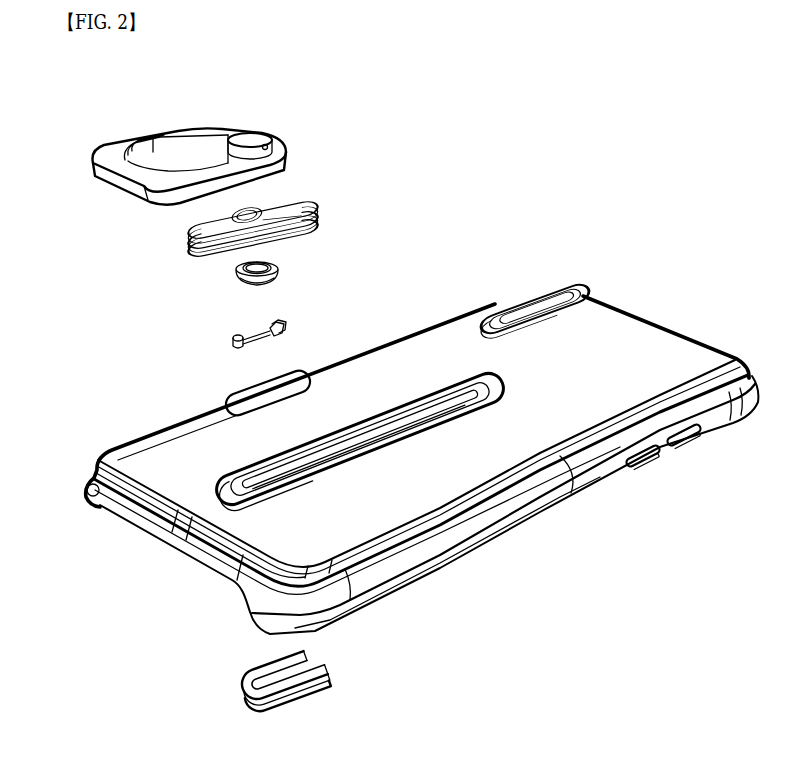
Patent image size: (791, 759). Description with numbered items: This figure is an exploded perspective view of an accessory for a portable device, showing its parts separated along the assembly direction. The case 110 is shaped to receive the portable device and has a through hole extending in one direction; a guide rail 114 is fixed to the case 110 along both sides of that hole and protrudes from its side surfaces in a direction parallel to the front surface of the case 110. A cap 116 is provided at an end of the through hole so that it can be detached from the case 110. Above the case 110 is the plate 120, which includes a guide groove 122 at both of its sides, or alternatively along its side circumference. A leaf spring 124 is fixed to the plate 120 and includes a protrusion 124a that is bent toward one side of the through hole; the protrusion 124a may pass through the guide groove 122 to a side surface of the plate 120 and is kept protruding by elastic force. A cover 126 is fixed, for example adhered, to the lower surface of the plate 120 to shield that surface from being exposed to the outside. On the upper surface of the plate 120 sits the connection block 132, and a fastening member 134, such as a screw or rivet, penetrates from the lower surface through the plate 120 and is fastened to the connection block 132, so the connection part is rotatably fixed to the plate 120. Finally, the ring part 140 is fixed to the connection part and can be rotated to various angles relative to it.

The case 110 is at (638, 340).
The guide rail 114 is at (420, 398).
The cap 116 is at (327, 670).
The plate 120 is at (288, 208).
The guide groove 122 is at (293, 232).
The leaf spring 124 is at (233, 345).
The protrusion 124a is at (277, 340).
The cover 126 is at (233, 400).
The connection block 132 is at (253, 140).
The fastening member 134 is at (233, 283).
The ring part 140 is at (112, 152).